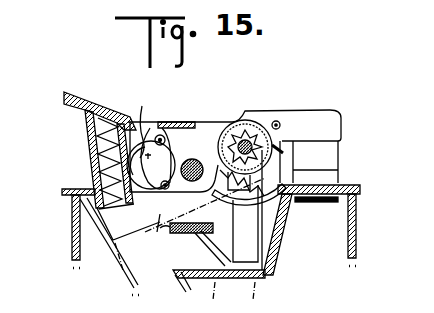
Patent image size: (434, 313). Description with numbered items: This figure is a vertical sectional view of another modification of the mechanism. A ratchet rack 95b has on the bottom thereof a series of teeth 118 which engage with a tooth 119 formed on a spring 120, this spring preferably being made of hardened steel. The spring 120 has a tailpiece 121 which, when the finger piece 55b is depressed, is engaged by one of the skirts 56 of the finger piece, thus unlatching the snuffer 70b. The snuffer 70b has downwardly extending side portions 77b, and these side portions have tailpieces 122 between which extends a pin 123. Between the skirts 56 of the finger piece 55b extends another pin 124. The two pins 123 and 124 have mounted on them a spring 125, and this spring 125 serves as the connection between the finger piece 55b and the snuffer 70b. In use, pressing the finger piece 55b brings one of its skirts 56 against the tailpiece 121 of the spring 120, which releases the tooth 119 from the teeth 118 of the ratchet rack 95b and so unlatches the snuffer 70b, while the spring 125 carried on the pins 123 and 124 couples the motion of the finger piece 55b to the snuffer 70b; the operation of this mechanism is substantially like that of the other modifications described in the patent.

The finger piece 55b is at (84, 146).
The skirt portions 56 is at (143, 200).
The snuffer 70b is at (318, 122).
The side portions 77b is at (188, 138).
The ratchet rack 95b is at (284, 220).
The teeth 118 is at (205, 233).
The tooth 119 is at (196, 235).
The spring 120 is at (262, 226).
The tailpiece 121 is at (160, 236).
The tailpieces 122 is at (151, 165).
The pin 123 is at (154, 194).
The pin 124 is at (160, 134).
The spring 125 is at (136, 126).